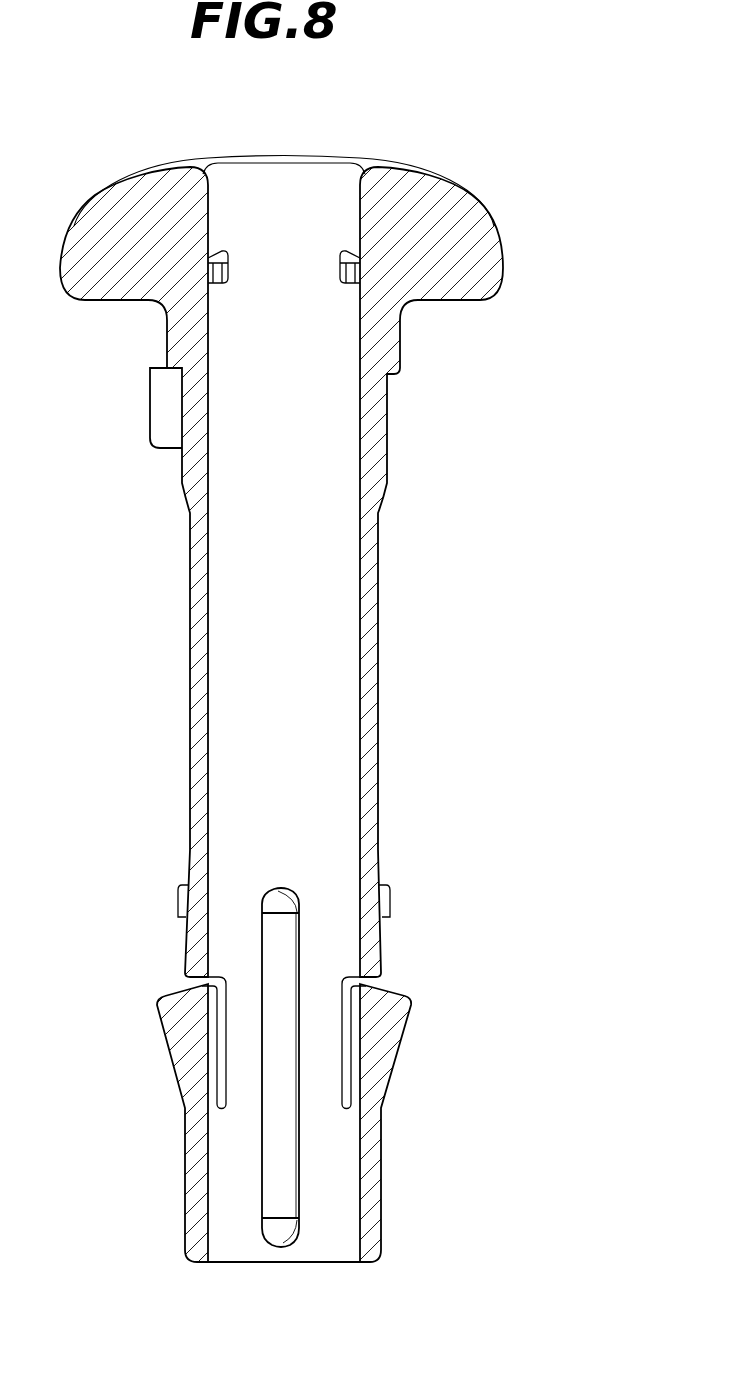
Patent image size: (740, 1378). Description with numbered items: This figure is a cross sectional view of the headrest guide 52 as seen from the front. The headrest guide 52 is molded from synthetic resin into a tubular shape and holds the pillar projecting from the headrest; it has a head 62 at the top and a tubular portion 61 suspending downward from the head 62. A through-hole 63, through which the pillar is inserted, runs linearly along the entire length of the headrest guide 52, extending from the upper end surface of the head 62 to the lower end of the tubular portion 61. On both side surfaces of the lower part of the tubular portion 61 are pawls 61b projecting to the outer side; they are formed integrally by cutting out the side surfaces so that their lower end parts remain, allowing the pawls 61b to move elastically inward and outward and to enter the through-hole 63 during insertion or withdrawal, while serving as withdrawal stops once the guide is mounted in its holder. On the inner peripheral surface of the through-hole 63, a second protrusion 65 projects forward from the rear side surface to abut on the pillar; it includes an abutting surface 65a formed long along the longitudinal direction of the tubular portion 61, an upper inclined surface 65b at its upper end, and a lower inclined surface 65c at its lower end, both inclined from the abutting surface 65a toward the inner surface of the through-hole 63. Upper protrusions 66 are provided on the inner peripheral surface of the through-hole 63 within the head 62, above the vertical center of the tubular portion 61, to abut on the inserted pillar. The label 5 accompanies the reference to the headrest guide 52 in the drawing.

The cap 5 is at (308, 170).
The headrest guide 52 is at (417, 168).
The tubular portion 61 is at (282, 688).
The pawls 61b is at (167, 1042).
The head 62 is at (150, 192).
The through-hole 63 is at (280, 182).
The second protrusion 65 is at (273, 1080).
The abutting surface 65a is at (268, 1145).
The upper inclined surface 65b is at (280, 902).
The lower inclined surface 65c is at (288, 1232).
The upper protrusions 66 is at (218, 284).